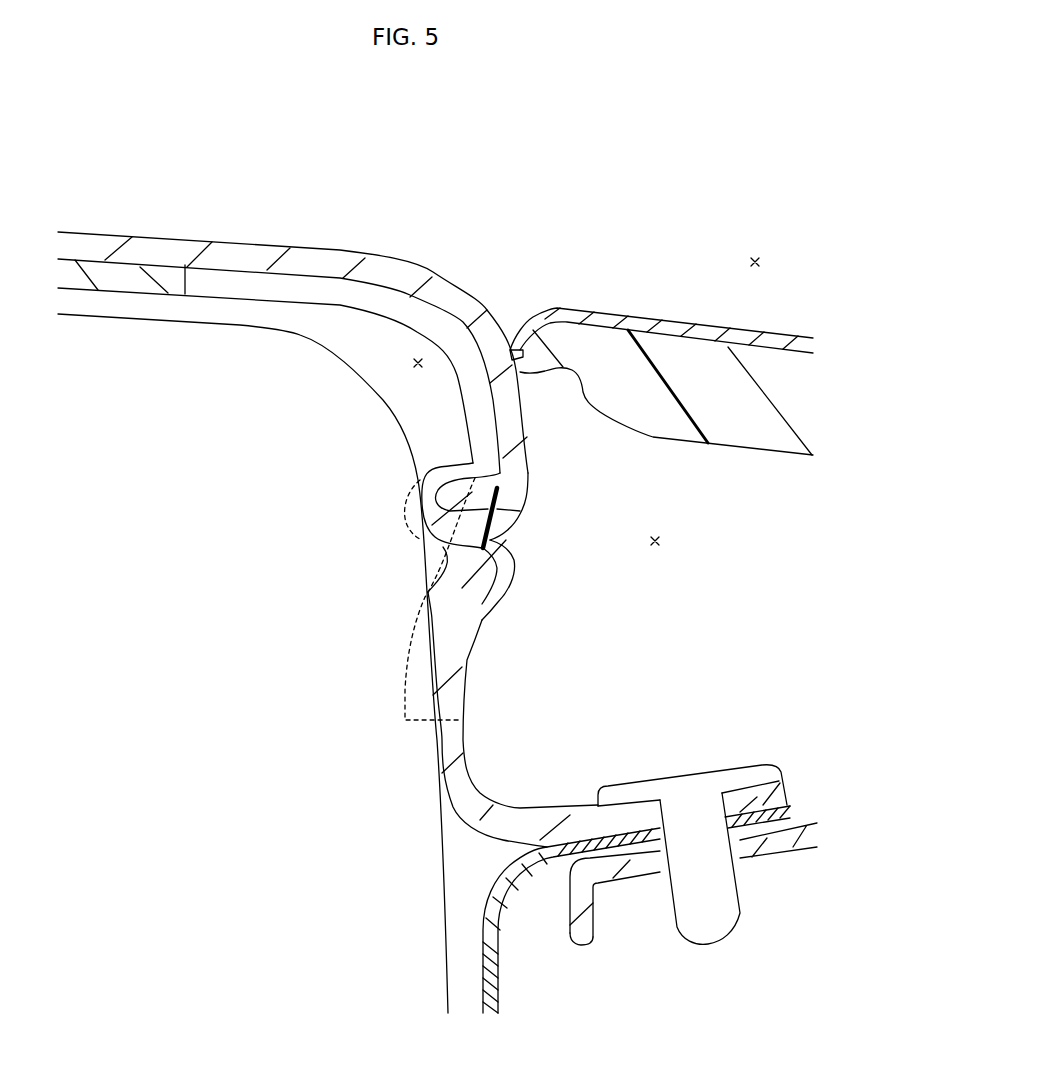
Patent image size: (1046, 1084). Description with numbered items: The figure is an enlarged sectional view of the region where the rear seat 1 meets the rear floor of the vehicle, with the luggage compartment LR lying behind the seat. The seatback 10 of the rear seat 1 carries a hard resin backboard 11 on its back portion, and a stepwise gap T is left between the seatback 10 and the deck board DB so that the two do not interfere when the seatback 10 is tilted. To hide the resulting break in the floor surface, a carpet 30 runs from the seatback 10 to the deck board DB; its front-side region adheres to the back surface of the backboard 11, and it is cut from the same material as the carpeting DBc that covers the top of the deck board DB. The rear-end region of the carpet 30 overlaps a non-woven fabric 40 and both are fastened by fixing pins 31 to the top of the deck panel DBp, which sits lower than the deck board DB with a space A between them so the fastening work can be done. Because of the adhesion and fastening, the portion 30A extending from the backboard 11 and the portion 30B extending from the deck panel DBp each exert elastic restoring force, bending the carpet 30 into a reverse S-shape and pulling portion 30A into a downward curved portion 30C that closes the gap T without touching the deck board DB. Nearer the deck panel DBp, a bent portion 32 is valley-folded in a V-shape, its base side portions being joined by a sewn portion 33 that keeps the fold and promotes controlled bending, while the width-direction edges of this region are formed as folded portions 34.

The rear seat 1 is at (231, 146).
The seatback 10 is at (225, 314).
The resin backboard 11 is at (104, 264).
The carpet 30 is at (159, 223).
The portion of the carpet extending from the backboard 30A is at (320, 263).
The portion of the carpet extending from the deck panel 30B is at (468, 792).
The curved portion 30C is at (453, 300).
The fixing pin 31 is at (685, 783).
The bent portion 32 is at (473, 473).
The sewn portion 33 is at (510, 542).
The folded portion 34 is at (495, 330).
The non-woven fabric 40 is at (510, 998).
The gap T is at (418, 360).
The deck board DB is at (682, 309).
The carpeting DBc is at (607, 318).
The deck panel DBp is at (642, 865).
The luggage compartment LR is at (756, 258).
The space A is at (663, 541).